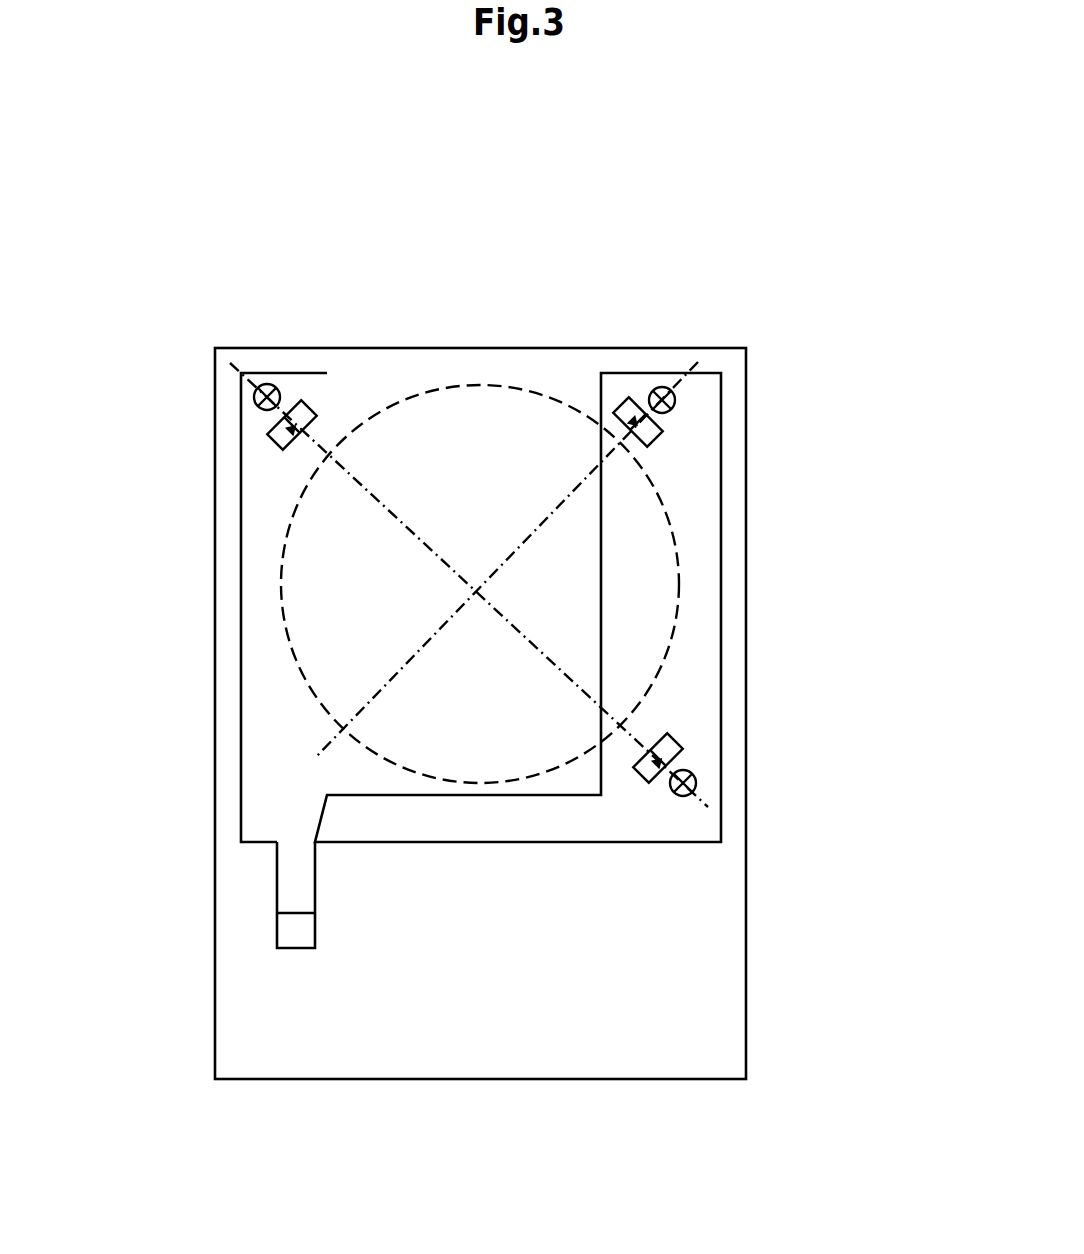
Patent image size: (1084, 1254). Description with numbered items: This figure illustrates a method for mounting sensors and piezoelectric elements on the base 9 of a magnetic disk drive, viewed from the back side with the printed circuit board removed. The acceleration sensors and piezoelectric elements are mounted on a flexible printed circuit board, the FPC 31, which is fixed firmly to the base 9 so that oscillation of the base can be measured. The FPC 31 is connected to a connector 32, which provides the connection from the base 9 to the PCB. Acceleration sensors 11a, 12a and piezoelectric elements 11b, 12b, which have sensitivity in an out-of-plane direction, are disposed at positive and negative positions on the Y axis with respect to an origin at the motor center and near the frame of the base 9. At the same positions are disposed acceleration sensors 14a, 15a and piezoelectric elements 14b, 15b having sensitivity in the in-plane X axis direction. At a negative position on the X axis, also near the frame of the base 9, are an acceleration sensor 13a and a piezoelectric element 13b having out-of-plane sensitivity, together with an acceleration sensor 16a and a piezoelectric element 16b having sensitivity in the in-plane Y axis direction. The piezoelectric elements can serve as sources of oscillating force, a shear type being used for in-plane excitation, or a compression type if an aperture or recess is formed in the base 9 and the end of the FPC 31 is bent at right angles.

The base 9 is at (683, 1018).
The FPC 31 is at (692, 720).
The connector 32 is at (293, 937).
The acceleration sensor 11a is at (786, 415).
The piezoelectric element 11b is at (680, 408).
The acceleration sensor 12a is at (801, 766).
The piezoelectric element 12b is at (695, 770).
The acceleration sensor 13a is at (342, 355).
The piezoelectric element 13b is at (278, 387).
The acceleration sensor 14a is at (707, 373).
The piezoelectric element 14b is at (637, 395).
The acceleration sensor 15a is at (783, 821).
The piezoelectric element 15b is at (653, 790).
The acceleration sensor 16a is at (184, 424).
The piezoelectric element 16b is at (273, 427).